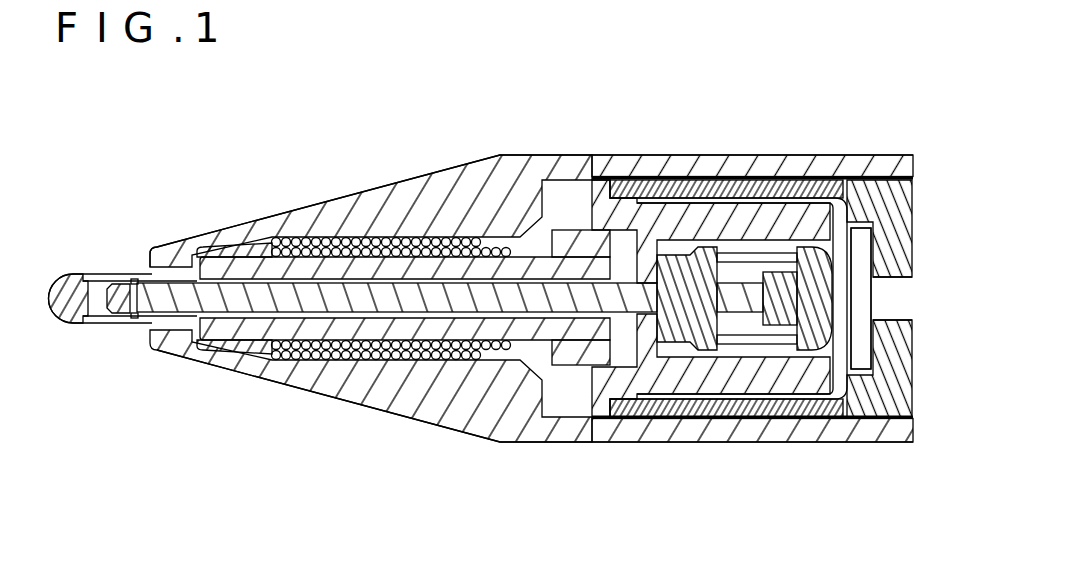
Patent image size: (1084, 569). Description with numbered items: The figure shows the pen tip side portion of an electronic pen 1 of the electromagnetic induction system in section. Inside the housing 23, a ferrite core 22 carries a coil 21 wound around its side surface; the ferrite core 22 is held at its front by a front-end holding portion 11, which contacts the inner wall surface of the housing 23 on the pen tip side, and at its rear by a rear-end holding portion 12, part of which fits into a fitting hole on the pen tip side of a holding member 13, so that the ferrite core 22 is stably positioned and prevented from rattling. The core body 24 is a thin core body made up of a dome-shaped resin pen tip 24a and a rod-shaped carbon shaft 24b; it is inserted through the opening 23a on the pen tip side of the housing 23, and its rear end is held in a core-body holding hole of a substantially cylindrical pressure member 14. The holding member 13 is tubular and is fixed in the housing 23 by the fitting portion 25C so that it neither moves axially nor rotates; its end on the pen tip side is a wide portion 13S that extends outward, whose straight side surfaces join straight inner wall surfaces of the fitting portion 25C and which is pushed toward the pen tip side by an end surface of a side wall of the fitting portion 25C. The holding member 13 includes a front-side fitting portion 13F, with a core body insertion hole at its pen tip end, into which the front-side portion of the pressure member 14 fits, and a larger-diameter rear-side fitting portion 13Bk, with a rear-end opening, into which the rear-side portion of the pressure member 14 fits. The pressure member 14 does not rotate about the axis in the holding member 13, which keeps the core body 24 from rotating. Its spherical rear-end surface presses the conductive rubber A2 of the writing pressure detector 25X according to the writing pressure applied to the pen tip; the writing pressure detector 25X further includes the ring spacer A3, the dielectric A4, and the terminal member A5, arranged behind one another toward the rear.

The electronic pen 1 is at (342, 96).
The front-end holding portion 11 is at (236, 250).
The rear-end holding portion 12 is at (577, 231).
The holding member 13 is at (728, 240).
The wide portion 13S is at (598, 183).
The front-side fitting portion 13F is at (678, 247).
The rear-side fitting portion 13Bk is at (765, 200).
The pressure member 14 is at (718, 443).
The coil 21 is at (298, 362).
The ferrite core 22 is at (548, 338).
The housing 23 is at (579, 443).
The opening 23a is at (145, 264).
The core body 24 is at (165, 392).
The pen tip 24a is at (83, 319).
The shaft 24b is at (147, 311).
The fitting portion 25C is at (860, 178).
The writing pressure detector 25X is at (958, 497).
The conductive rubber A2 is at (833, 356).
The ring spacer A3 is at (838, 381).
The dielectric A4 is at (887, 419).
The terminal member A5 is at (903, 315).